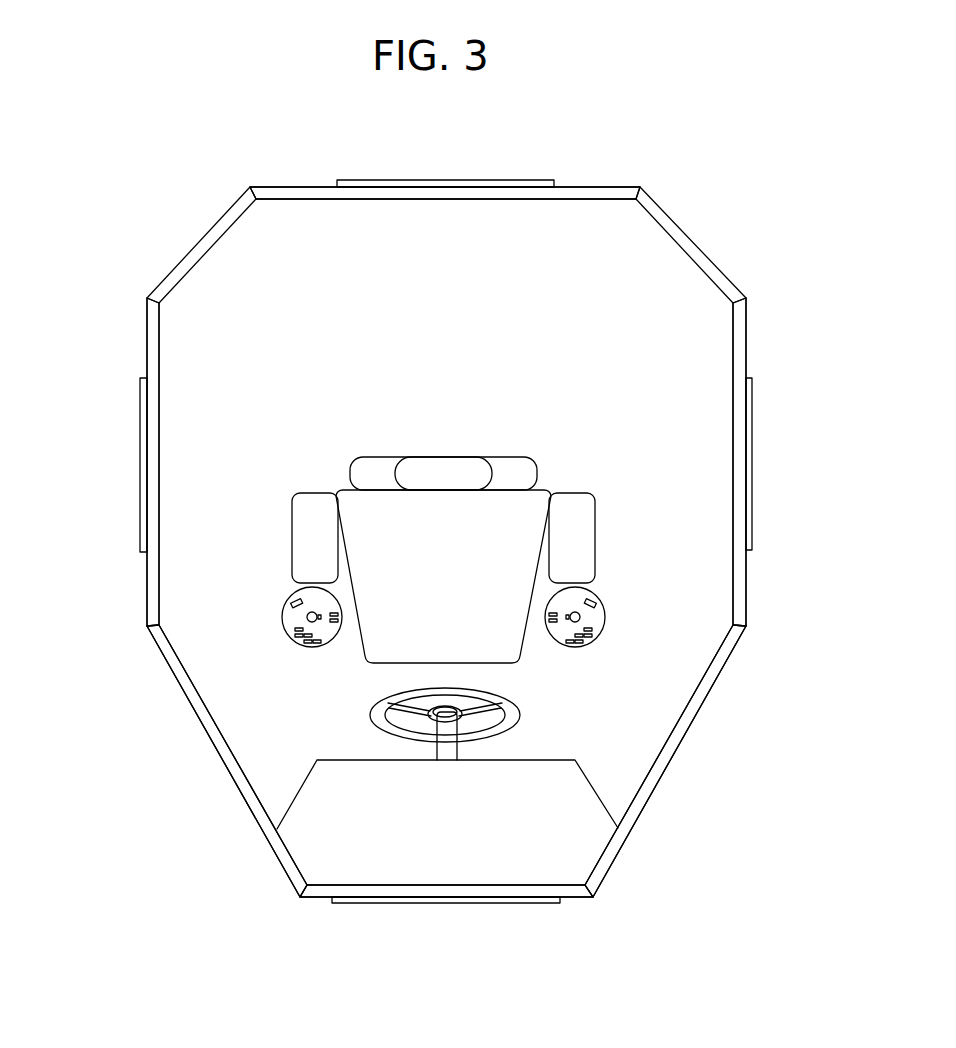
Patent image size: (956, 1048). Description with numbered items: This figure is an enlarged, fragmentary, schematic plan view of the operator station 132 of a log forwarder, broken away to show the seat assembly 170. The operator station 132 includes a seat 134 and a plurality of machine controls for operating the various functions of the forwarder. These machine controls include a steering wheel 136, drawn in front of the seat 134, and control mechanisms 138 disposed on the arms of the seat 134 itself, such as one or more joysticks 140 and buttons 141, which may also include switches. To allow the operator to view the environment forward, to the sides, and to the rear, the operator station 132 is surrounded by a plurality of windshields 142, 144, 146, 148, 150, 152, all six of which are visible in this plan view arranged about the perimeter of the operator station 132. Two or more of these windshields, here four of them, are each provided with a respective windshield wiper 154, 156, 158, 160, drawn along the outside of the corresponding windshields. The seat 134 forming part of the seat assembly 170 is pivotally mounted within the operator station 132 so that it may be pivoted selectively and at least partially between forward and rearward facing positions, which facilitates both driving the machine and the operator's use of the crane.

The operator station 132 is at (695, 243).
The seat 134 is at (478, 546).
The steering wheel 136 is at (522, 712).
The control mechanisms 138 is at (618, 596).
The joystick 140 is at (314, 621).
The buttons 141 is at (298, 640).
The windshield 142 is at (297, 187).
The windshield 144 is at (147, 342).
The windshield 146 is at (198, 718).
The windshield 148 is at (573, 900).
The windshield 150 is at (653, 792).
The windshield 152 is at (746, 584).
The windshield wiper 154 is at (433, 182).
The windshield wiper 156 is at (140, 463).
The windshield wiper 158 is at (425, 903).
The windshield wiper 160 is at (752, 463).
The seat assembly 170 is at (282, 474).